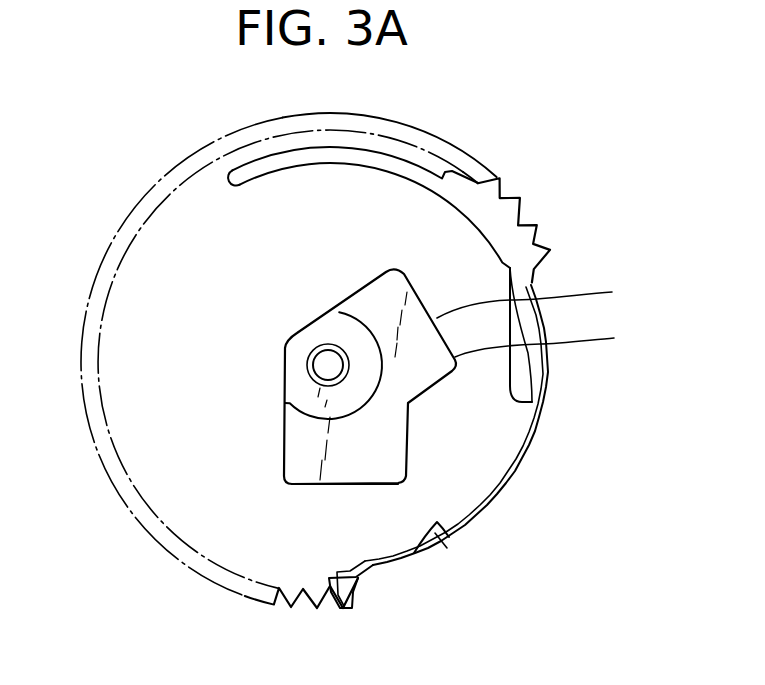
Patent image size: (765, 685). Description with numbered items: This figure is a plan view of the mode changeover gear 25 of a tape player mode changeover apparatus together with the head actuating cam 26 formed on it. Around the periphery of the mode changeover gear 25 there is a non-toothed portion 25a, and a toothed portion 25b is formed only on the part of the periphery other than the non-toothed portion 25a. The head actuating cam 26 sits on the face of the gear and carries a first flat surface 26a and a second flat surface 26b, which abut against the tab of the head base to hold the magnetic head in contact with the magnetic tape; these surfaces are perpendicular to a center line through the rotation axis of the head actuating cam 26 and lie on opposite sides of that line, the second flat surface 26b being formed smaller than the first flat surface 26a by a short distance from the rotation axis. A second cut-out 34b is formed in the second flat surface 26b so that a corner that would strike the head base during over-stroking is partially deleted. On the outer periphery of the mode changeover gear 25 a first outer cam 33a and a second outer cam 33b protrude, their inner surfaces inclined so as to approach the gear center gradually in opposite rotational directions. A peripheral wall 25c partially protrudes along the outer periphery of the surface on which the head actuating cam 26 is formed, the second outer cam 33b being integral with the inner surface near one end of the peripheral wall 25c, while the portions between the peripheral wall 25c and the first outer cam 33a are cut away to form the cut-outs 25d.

The mode changeover gear 25 is at (512, 152).
The non-toothed portion 25a is at (402, 569).
The toothed portion 25b is at (534, 224).
The peripheral wall 25c is at (521, 197).
The cut-outs 25d is at (182, 230).
The head actuating cam 26 is at (272, 350).
The first flat surface 26a is at (300, 482).
The second flat surface 26b is at (559, 295).
The first outer cam 33a is at (442, 540).
The second outer cam 33b is at (515, 382).
The second cut-out 34b is at (569, 338).